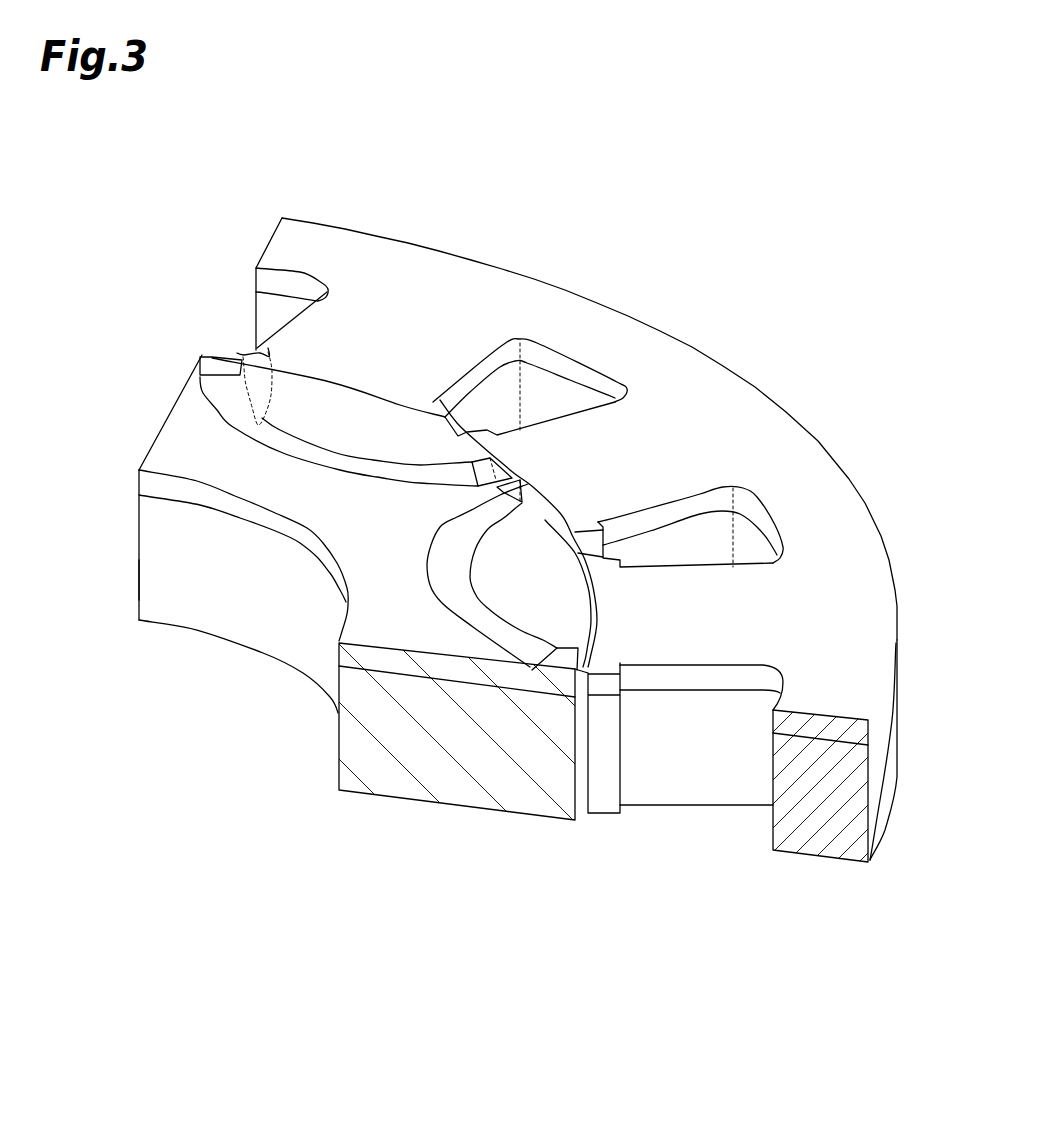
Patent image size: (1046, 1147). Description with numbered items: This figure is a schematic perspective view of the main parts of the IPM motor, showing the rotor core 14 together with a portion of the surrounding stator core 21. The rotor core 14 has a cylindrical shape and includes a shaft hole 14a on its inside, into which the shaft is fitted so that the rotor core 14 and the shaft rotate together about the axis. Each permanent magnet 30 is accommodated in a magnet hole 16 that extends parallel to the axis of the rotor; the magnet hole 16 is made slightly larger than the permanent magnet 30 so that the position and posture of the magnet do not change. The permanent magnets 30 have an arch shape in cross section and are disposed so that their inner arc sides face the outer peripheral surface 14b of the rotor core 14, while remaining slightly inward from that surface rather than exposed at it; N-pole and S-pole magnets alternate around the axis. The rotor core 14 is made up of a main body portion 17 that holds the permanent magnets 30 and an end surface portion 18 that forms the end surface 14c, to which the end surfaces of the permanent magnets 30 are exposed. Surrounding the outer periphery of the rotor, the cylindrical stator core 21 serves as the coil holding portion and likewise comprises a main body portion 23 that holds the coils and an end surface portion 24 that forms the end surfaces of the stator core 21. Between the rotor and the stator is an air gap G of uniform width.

The rotor core 14 is at (68, 470).
The shaft hole 14a is at (228, 613).
The outer peripheral surface 14b is at (583, 755).
The end surface 14c is at (182, 427).
The magnet hole 16 is at (212, 357).
The main body portion 17 is at (139, 558).
The end surface portion 18 is at (139, 480).
The stator core 21 is at (660, 833).
The main body portion 23 is at (773, 830).
The end surface portion 24 is at (770, 719).
The permanent magnet 30 is at (258, 350).
The air gap G is at (590, 590).